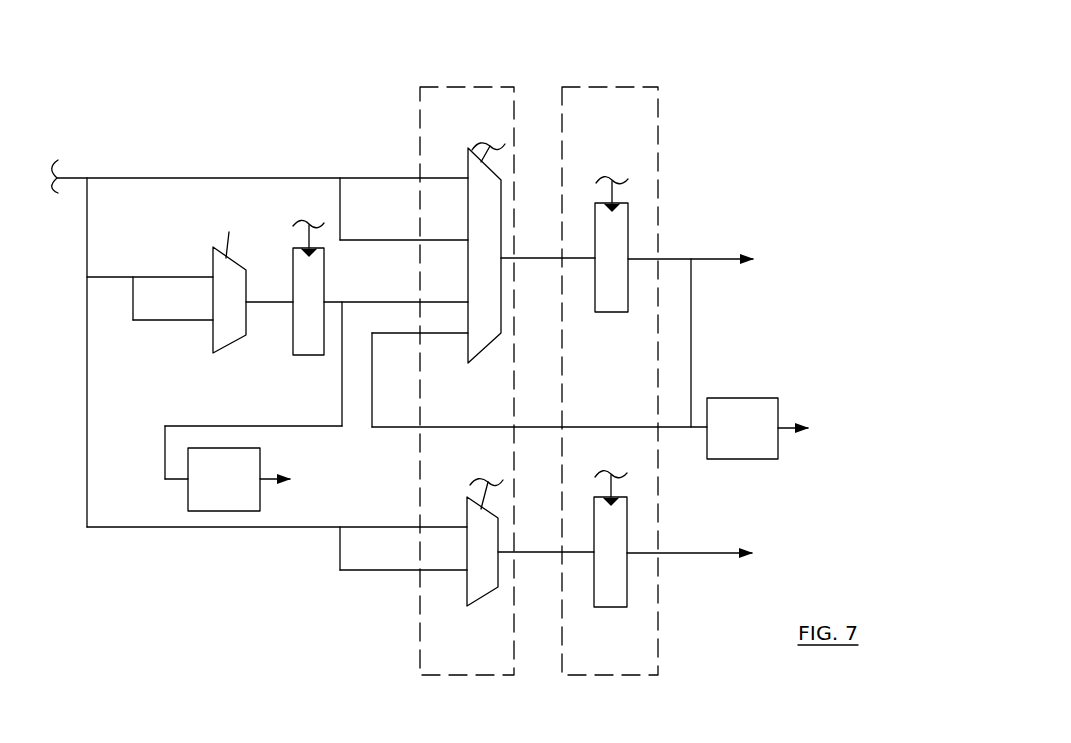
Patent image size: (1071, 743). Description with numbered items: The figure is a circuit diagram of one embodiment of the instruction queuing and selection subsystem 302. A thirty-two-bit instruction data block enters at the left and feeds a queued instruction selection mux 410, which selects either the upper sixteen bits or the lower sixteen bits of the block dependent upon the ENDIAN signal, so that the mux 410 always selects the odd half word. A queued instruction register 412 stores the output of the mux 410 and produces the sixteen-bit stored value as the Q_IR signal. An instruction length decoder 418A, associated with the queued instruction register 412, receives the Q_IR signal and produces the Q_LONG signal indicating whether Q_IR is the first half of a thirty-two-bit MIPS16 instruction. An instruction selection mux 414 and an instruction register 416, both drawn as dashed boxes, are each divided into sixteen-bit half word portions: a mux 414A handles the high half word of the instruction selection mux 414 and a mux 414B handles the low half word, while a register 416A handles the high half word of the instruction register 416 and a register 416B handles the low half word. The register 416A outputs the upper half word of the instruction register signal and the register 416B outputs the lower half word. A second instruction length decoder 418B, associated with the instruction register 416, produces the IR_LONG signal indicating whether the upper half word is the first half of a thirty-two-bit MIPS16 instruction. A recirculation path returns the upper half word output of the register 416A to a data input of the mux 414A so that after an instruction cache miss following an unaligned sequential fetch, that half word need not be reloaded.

The instruction queuing and selection subsystem 302 is at (699, 68).
The queued instruction selection mux 410 is at (231, 346).
The queued instruction register 412 is at (311, 357).
The instruction selection mux 414 is at (420, 118).
The mux 414A is at (486, 352).
The mux 414B is at (483, 598).
The instruction register 416 is at (660, 117).
The register 416A is at (613, 314).
The register 416B is at (612, 609).
The instruction length decoder 418A is at (203, 503).
The instruction length decoder 418B is at (721, 452).